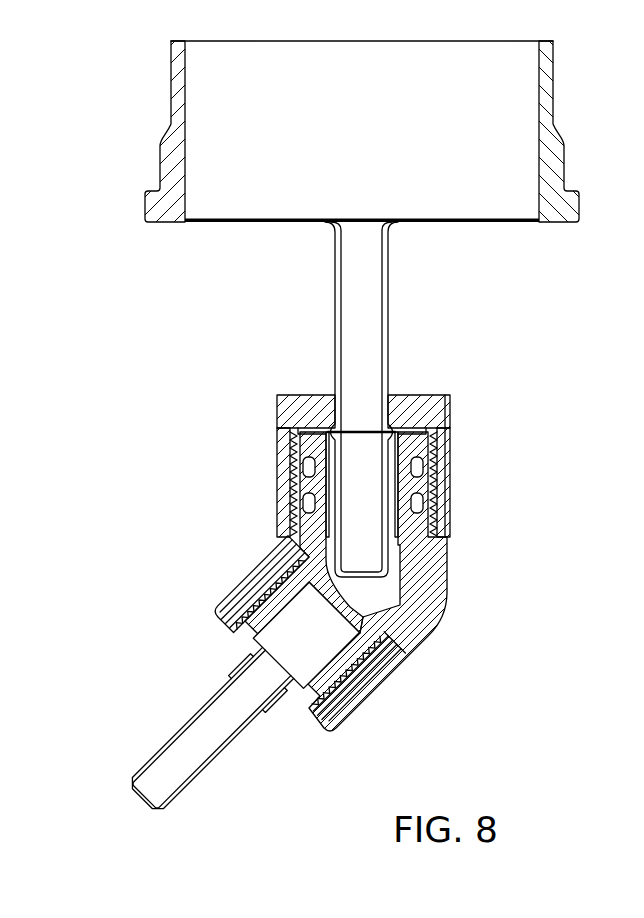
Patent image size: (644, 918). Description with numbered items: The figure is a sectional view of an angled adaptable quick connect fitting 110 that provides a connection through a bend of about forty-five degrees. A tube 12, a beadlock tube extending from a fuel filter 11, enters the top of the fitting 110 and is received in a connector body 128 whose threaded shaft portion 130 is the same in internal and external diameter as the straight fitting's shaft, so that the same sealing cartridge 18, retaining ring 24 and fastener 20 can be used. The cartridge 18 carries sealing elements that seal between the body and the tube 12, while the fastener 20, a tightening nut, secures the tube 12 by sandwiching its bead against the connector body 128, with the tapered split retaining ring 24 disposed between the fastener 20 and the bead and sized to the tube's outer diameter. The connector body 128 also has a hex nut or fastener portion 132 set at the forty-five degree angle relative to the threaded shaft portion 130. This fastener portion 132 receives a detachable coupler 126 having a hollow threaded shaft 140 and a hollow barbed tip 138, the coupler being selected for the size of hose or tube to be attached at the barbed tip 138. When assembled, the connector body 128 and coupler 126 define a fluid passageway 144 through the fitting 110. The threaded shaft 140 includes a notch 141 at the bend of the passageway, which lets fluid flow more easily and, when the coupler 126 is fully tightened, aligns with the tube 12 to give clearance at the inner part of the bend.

The fuel filter 11 is at (512, 119).
The tube 12 is at (388, 278).
The sealing cartridge 18 is at (413, 478).
The fastener 20 is at (282, 407).
The retaining ring 24 is at (323, 410).
The fitting 110 is at (532, 527).
The coupler 126 is at (260, 720).
The connector body 128 is at (437, 608).
The threaded shaft portion 130 is at (292, 493).
The fastener portion 132 is at (242, 583).
The barbed tip 138 is at (172, 740).
The threaded shaft 140 is at (353, 667).
The notch 141 is at (367, 613).
The fluid passageway 144 is at (153, 785).